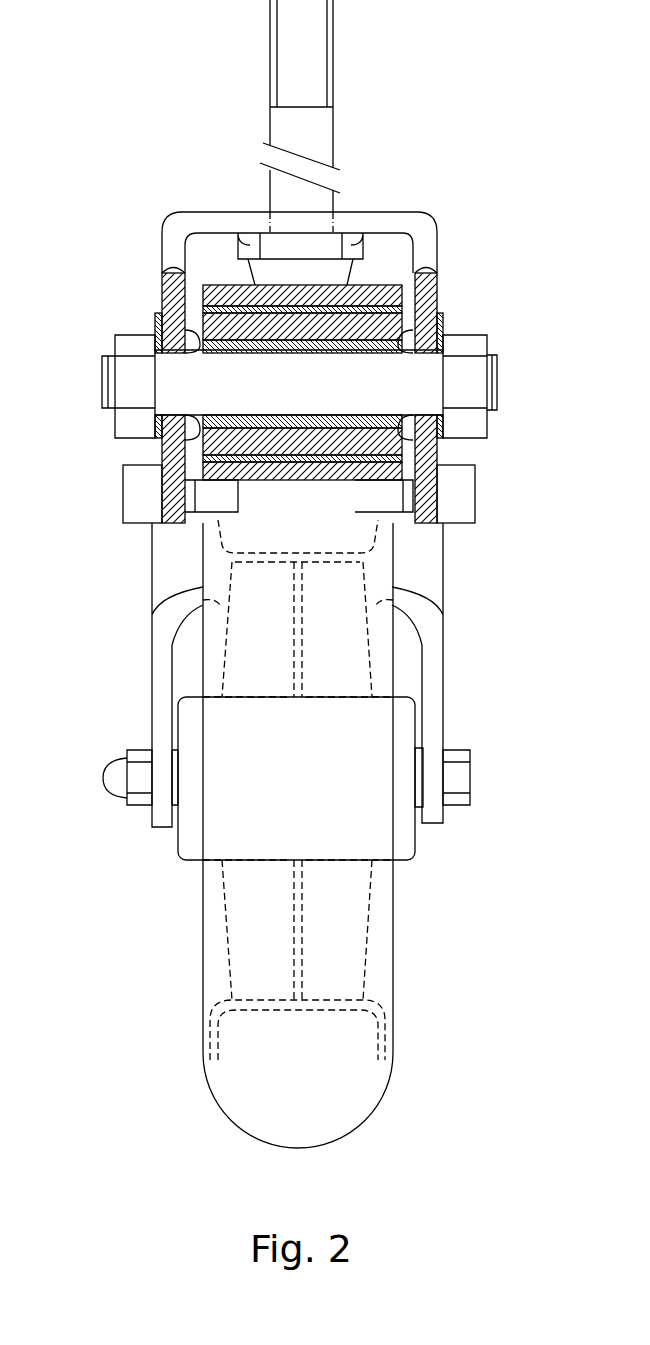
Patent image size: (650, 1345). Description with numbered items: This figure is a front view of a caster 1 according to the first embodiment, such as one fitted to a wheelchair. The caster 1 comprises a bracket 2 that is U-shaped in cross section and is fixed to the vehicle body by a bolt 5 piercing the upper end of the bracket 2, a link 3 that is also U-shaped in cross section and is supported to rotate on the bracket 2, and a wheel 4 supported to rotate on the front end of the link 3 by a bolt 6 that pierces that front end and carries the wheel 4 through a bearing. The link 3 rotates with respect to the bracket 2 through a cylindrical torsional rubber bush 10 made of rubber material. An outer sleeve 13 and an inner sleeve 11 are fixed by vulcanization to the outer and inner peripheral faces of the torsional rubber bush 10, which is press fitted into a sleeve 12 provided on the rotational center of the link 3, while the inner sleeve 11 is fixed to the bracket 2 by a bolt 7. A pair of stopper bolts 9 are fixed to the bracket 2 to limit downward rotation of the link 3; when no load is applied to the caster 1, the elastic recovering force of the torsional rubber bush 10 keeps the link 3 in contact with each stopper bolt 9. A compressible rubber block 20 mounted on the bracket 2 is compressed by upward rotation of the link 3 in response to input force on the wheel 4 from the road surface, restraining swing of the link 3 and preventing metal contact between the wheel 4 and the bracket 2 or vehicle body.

The caster 1 is at (166, 874).
The bracket 2 is at (437, 235).
The link 3 is at (443, 670).
The wheel 4 is at (393, 1085).
The bolt 5 is at (333, 130).
The bolt 6 is at (470, 775).
The bolt 7 is at (497, 390).
The stopper bolt 9 is at (123, 495).
The torsional rubber bush 10 is at (163, 295).
The inner sleeve 11 is at (158, 323).
The sleeve 12 is at (200, 303).
The outer sleeve 13 is at (418, 300).
The compressible rubber block 20 is at (343, 275).